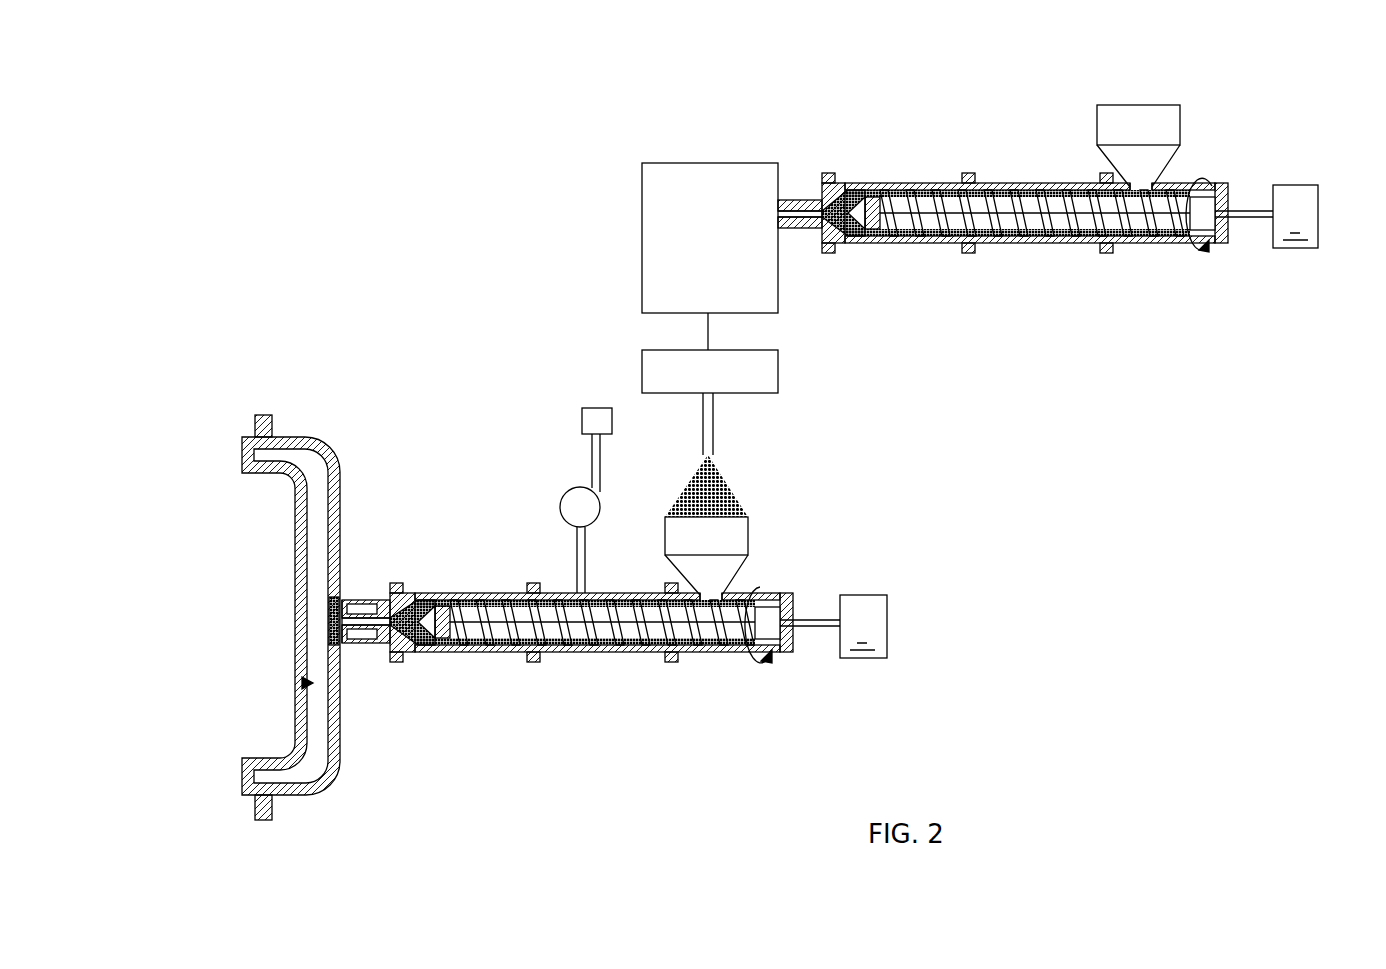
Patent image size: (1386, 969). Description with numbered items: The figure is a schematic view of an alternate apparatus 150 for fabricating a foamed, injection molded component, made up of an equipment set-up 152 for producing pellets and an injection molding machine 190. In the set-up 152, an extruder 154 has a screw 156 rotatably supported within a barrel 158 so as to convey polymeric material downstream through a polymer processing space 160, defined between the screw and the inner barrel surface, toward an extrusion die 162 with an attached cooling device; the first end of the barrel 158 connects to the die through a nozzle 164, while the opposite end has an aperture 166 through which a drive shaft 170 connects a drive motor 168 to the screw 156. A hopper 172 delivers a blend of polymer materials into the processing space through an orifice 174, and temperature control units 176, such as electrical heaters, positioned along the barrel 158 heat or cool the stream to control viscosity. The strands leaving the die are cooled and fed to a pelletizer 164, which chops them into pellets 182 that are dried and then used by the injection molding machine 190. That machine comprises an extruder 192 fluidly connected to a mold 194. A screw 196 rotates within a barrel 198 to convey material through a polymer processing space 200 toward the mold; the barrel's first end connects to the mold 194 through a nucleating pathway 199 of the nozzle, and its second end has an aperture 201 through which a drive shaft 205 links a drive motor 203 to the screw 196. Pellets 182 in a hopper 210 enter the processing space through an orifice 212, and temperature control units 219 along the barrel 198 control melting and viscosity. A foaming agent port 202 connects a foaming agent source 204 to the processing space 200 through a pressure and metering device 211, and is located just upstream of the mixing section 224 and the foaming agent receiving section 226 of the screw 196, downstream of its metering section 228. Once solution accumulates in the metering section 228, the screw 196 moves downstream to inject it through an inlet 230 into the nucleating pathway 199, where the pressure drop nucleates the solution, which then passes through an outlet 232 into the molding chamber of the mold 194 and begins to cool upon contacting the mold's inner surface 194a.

The apparatus 150 is at (932, 404).
The equipment set-up 152 is at (872, 98).
The extruder 154 is at (886, 264).
The screw 156 is at (1070, 243).
The barrel 158 is at (1016, 185).
The polymer processing space 160 is at (930, 190).
The extrusion die 162 is at (641, 232).
The nozzle / pelletizer 164 is at (778, 365).
The aperture 166 is at (1233, 212).
The drive motor 168 is at (1293, 250).
The drive shaft 170 is at (1240, 225).
The hopper 172 is at (1181, 105).
The orifice 174 is at (1131, 190).
The temperature control units 176 is at (1106, 254).
The pellets 182 is at (728, 470).
The injection molding machine 190 is at (452, 714).
The extruder 192 is at (472, 670).
The mold 194 is at (353, 802).
The inner surface 194a is at (304, 683).
The screw 196 is at (600, 652).
The barrel 198 is at (622, 652).
The nucleating pathway 199 is at (348, 652).
The polymer processing space 200 is at (487, 594).
The aperture 201 is at (796, 624).
The foaming agent port 202 is at (578, 592).
The drive motor 203 is at (862, 658).
The foaming agent source 204 is at (582, 408).
The drive shaft 205 is at (790, 652).
The hopper 210 is at (750, 520).
The pressure and metering device 211 is at (563, 498).
The orifice 212 is at (694, 585).
The temperature control units 219 is at (398, 662).
The mixing section 224 is at (472, 593).
The foaming agent receiving section 226 is at (540, 652).
The metering section 228 is at (410, 593).
The inlet 230 is at (403, 590).
The outlet 232 is at (330, 618).